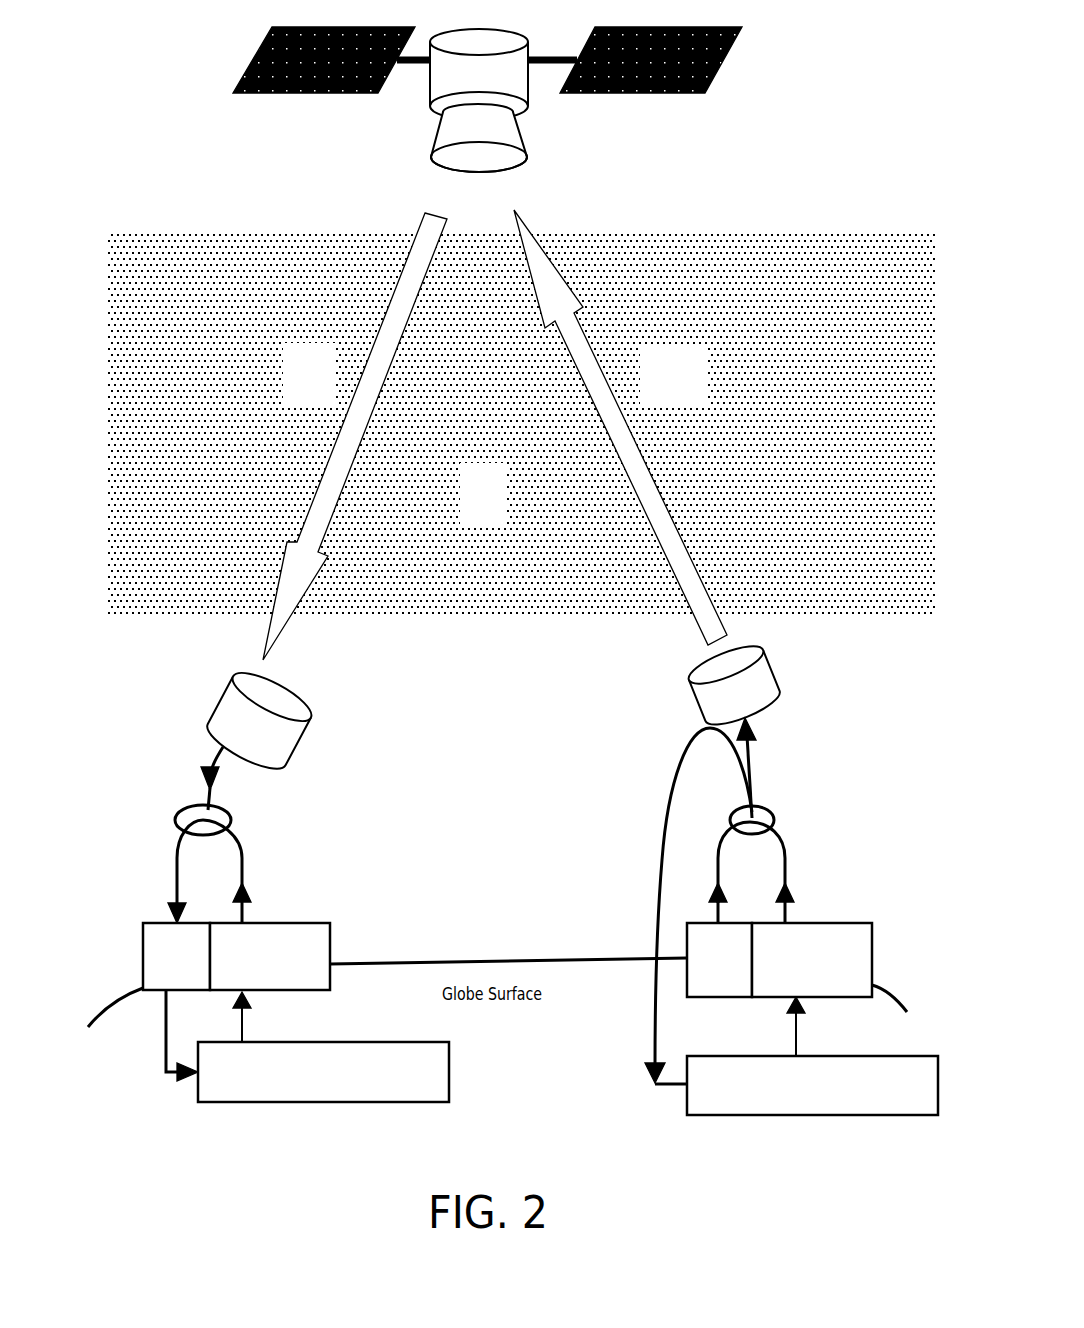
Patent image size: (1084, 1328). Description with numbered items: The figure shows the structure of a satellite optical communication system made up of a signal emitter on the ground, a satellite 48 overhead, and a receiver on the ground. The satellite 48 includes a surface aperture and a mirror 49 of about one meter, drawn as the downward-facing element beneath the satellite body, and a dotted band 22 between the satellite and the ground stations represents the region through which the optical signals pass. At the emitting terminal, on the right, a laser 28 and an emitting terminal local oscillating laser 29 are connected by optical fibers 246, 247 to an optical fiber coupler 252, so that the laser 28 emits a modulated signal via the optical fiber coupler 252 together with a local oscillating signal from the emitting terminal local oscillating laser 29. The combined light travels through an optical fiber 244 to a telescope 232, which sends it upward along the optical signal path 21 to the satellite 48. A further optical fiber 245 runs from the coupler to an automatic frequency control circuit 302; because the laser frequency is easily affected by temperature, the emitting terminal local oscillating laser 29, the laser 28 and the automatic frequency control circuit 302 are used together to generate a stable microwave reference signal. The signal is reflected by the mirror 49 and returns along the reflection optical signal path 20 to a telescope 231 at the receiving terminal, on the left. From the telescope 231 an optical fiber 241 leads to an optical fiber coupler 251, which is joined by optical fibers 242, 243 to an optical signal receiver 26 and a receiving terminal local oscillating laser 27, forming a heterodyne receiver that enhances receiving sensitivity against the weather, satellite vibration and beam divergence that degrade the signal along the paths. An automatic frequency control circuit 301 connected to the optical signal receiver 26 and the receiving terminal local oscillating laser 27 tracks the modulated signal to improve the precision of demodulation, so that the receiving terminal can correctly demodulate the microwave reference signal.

The reflection optical signal path 20 is at (348, 405).
The optical signal path 21 is at (614, 392).
The atmosphere 22 is at (500, 506).
The satellite 48 is at (457, 82).
The mirror 49 is at (513, 155).
The telescope 231 is at (283, 703).
The telescope 232 is at (703, 672).
The optical fiber 241 is at (207, 763).
The optical fiber 242 is at (177, 852).
The optical fiber 243 is at (247, 867).
The optical fiber 244 is at (750, 745).
The optical fiber 245 is at (677, 805).
The optical fiber 246 is at (718, 848).
The optical fiber 247 is at (785, 848).
The optical fiber coupler 251 is at (232, 820).
The optical fiber coupler 252 is at (775, 817).
The optical signal receiver 26 is at (157, 972).
The receiving terminal local oscillating laser 27 is at (287, 972).
The laser 28 is at (707, 980).
The emitting terminal local oscillating laser 29 is at (830, 980).
The automatic frequency control circuit 301 is at (297, 1102).
The automatic frequency control circuit 302 is at (773, 1115).